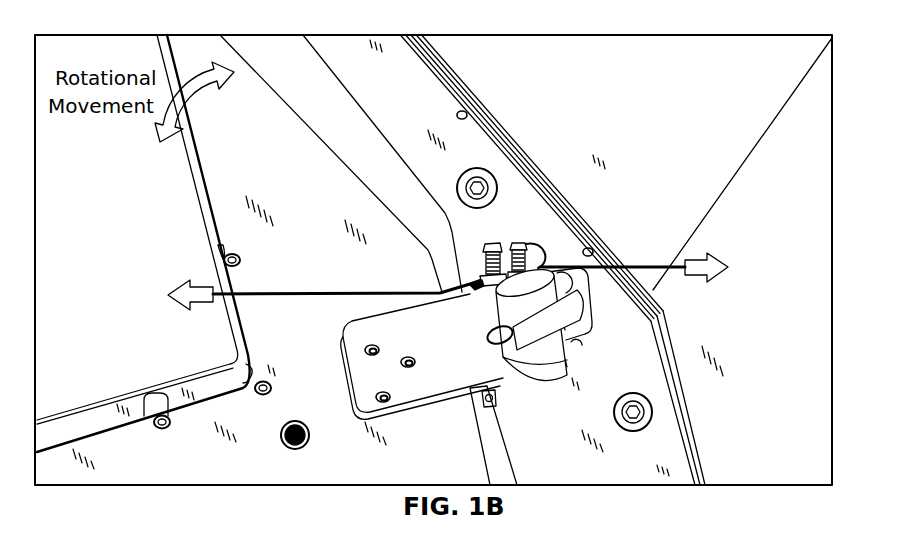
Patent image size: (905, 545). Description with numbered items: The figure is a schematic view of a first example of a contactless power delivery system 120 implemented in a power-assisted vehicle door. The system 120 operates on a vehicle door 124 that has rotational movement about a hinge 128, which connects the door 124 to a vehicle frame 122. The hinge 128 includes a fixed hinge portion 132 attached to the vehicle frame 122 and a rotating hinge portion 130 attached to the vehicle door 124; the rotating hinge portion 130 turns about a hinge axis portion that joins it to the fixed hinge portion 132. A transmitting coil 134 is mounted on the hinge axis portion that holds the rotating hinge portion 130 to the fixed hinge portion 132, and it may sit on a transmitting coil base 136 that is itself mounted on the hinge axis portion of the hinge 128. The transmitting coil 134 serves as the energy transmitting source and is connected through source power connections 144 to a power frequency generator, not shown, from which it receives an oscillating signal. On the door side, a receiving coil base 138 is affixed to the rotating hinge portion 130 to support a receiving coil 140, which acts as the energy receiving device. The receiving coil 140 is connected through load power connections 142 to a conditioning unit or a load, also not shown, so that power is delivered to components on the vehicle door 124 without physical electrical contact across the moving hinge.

The contactless power delivery system 120 is at (565, 107).
The vehicle frame 122 is at (586, 413).
The vehicle door 124 is at (455, 435).
The hinge 128 is at (597, 325).
The rotating hinge portion 130 is at (473, 357).
The fixed hinge portion 132 is at (568, 322).
The transmitting coil 134 is at (523, 241).
The transmitting coil base 136 is at (530, 242).
The receiving coil base 138 is at (495, 290).
The receiving coil 140 is at (496, 243).
The load power connections 142 is at (300, 292).
The source power connections 144 is at (688, 256).